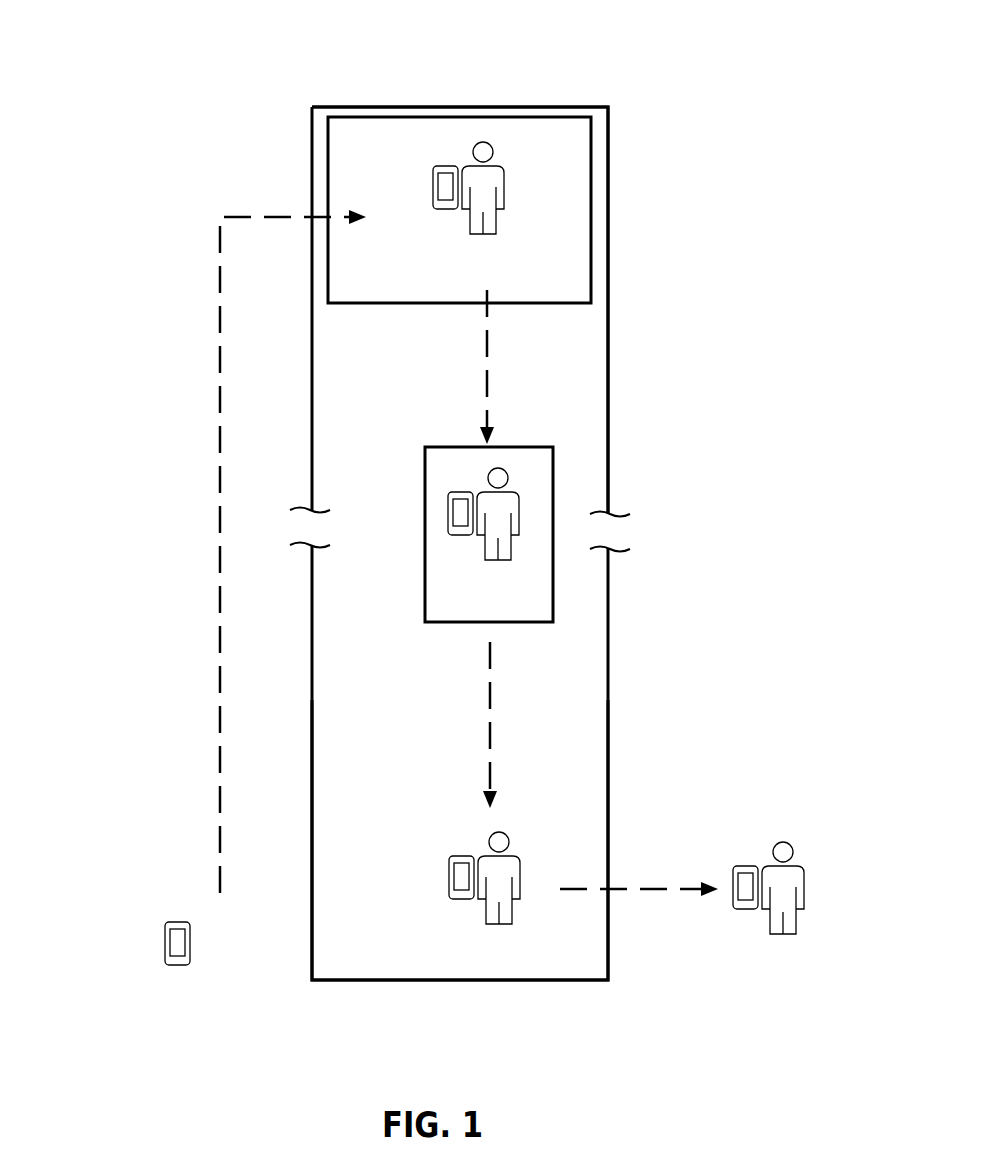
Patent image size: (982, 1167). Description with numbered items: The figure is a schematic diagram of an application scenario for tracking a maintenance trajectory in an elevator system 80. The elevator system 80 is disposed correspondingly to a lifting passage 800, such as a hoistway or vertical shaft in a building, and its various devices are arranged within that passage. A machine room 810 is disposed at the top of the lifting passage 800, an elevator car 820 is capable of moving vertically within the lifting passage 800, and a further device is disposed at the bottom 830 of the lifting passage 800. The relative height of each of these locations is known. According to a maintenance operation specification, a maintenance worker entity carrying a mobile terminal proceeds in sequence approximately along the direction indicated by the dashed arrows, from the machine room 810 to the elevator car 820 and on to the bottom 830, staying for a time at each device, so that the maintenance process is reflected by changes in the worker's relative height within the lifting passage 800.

The elevator system 80 is at (306, 93).
The lifting passage 800 is at (609, 175).
The machine room 810 is at (592, 228).
The elevator car 820 is at (553, 472).
The bottom of the lifting passage 830 is at (334, 886).